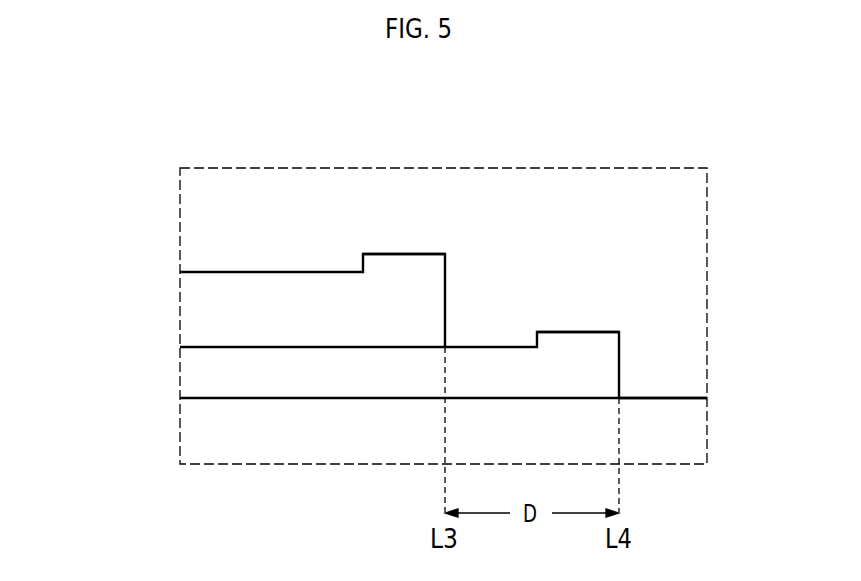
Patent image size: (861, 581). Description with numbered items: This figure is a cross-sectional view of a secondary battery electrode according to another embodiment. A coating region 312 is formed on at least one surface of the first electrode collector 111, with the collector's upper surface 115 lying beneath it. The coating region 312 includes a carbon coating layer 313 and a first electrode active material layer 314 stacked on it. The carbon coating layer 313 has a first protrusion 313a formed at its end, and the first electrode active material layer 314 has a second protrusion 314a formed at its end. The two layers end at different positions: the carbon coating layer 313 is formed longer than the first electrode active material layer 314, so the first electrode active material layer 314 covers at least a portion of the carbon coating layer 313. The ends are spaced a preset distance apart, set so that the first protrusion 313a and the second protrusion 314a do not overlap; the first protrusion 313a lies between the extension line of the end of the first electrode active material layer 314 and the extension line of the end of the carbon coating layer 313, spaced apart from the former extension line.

The first electrode collector 111 is at (188, 435).
The upper surface of substrate 115 is at (675, 398).
The coating region 312 is at (317, 244).
The carbon coating layer 313 is at (188, 370).
The first protrusion 313a is at (582, 337).
The first electrode active material layer 314 is at (188, 313).
The second protrusion 314a is at (403, 260).